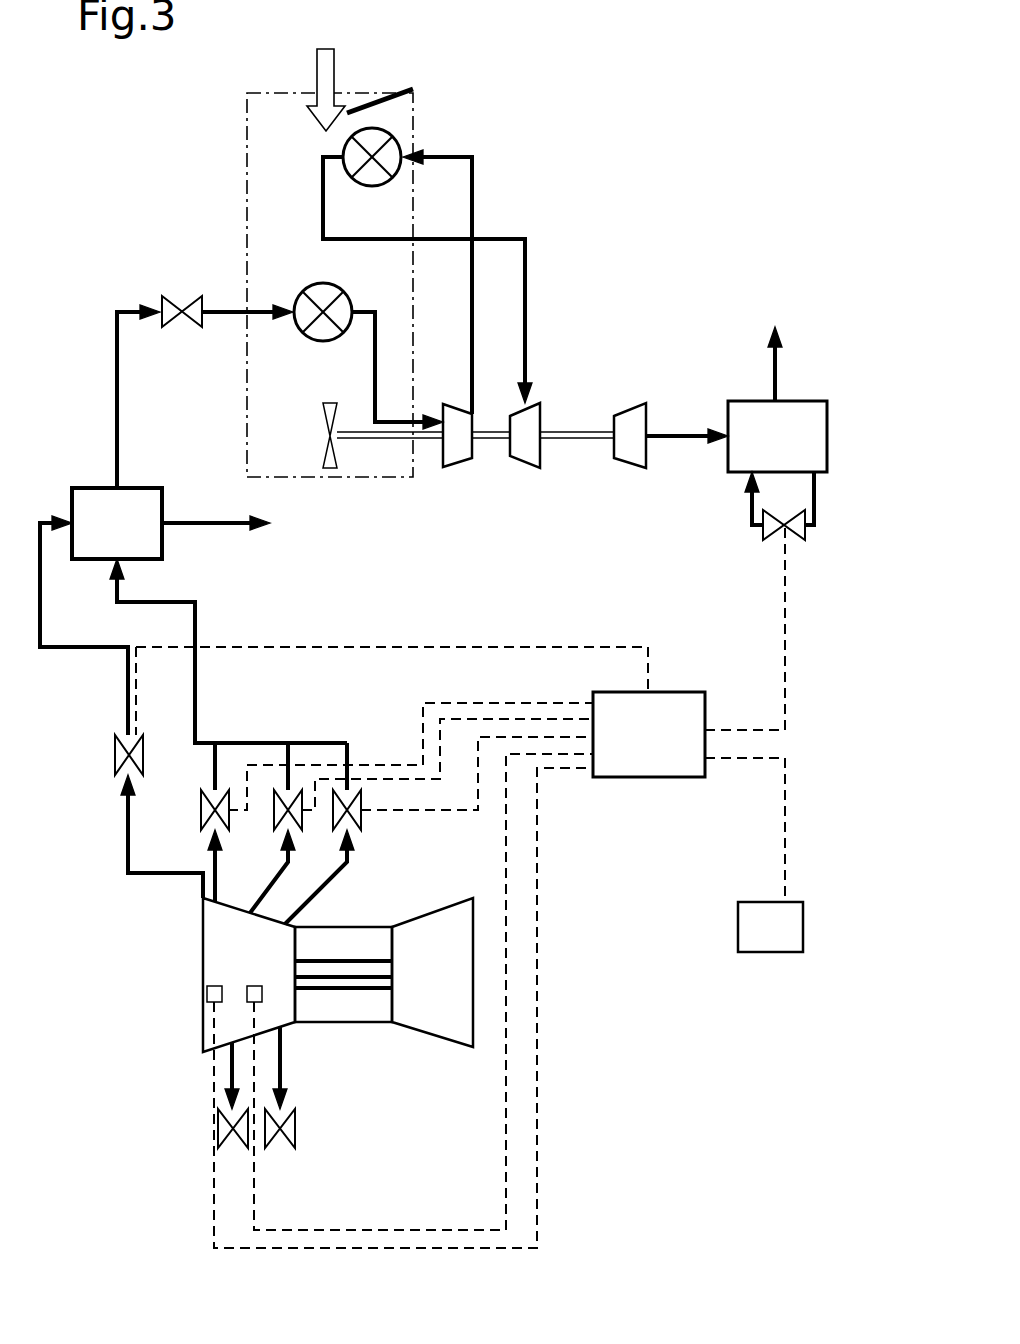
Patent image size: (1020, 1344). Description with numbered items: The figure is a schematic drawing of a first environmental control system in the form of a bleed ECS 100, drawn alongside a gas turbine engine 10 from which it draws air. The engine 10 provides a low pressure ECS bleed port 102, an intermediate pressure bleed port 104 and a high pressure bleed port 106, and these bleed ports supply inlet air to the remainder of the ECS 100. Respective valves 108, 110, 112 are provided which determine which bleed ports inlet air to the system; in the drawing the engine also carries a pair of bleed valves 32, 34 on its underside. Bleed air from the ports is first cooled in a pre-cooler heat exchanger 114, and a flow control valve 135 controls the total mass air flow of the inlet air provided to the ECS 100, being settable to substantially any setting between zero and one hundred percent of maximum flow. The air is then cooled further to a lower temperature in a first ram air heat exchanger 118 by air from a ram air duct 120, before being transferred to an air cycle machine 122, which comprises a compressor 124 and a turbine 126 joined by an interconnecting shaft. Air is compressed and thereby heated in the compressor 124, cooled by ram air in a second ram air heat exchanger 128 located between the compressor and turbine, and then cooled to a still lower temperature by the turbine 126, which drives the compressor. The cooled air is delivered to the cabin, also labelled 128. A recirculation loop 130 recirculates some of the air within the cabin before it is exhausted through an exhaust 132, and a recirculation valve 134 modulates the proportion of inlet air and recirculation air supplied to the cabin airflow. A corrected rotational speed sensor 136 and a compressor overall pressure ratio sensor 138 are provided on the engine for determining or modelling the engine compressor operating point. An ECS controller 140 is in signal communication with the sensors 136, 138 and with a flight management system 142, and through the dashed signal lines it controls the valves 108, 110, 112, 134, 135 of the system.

The gas turbine engine 10 is at (368, 1048).
The bleed valve 32 is at (238, 1151).
The bleed valve 34 is at (282, 1151).
The bleed ECS 100 is at (566, 885).
The low pressure ECS bleed port 102 is at (210, 866).
The intermediate pressure bleed port 104 is at (252, 906).
The high pressure bleed port 106 is at (310, 902).
The valve 108 is at (205, 800).
The valve 110 is at (280, 818).
The valve 112 is at (362, 818).
The pre-cooler heat exchanger 114 is at (145, 486).
The first ram air heat exchanger 118 is at (247, 93).
The ram air duct 120 is at (335, 78).
The air cycle machine 122 is at (559, 496).
The compressor 124 is at (457, 465).
The turbine 126 is at (523, 452).
The second ram air heat exchanger 128 is at (415, 140).
The recirculation loop 130 is at (745, 510).
The exhaust 132 is at (777, 378).
The recirculation valve 134 is at (778, 537).
The flow control valve 135 is at (178, 298).
The corrected rotational speed sensor 136 is at (216, 985).
The compressor overall pressure ratio sensor 138 is at (258, 990).
The ECS controller 140 is at (655, 779).
The flight management system 142 is at (750, 902).